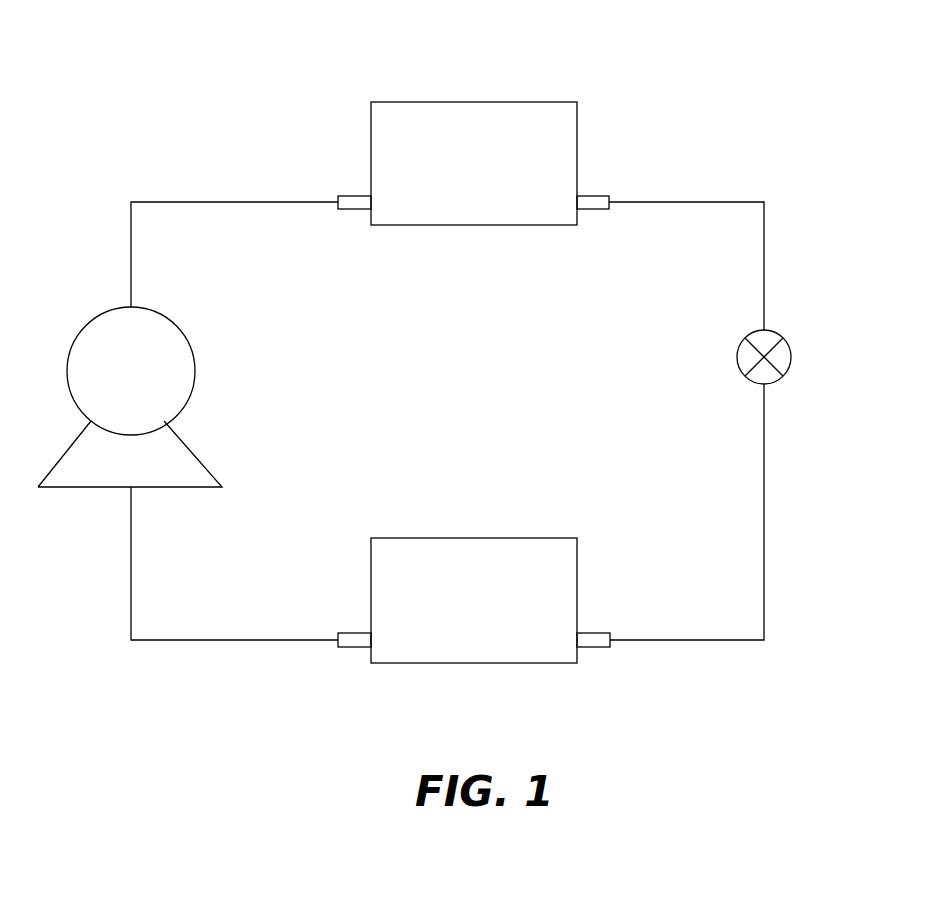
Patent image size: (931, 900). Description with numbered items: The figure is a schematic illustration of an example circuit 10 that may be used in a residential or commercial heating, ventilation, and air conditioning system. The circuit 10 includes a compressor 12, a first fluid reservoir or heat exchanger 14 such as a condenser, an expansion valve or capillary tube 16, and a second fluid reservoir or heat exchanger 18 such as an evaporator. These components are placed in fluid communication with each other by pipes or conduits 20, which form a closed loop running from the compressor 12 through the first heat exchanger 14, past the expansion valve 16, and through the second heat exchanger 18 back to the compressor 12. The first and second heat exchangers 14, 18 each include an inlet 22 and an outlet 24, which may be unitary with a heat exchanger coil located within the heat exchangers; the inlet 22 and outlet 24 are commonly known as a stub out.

The circuit 10 is at (52, 54).
The compressor 12 is at (108, 389).
The first heat exchanger 14 is at (452, 181).
The expansion valve 16 is at (791, 357).
The second heat exchanger 18 is at (452, 603).
The conduits 20 is at (227, 202).
The inlet 22 is at (353, 209).
The outlet 24 is at (592, 209).